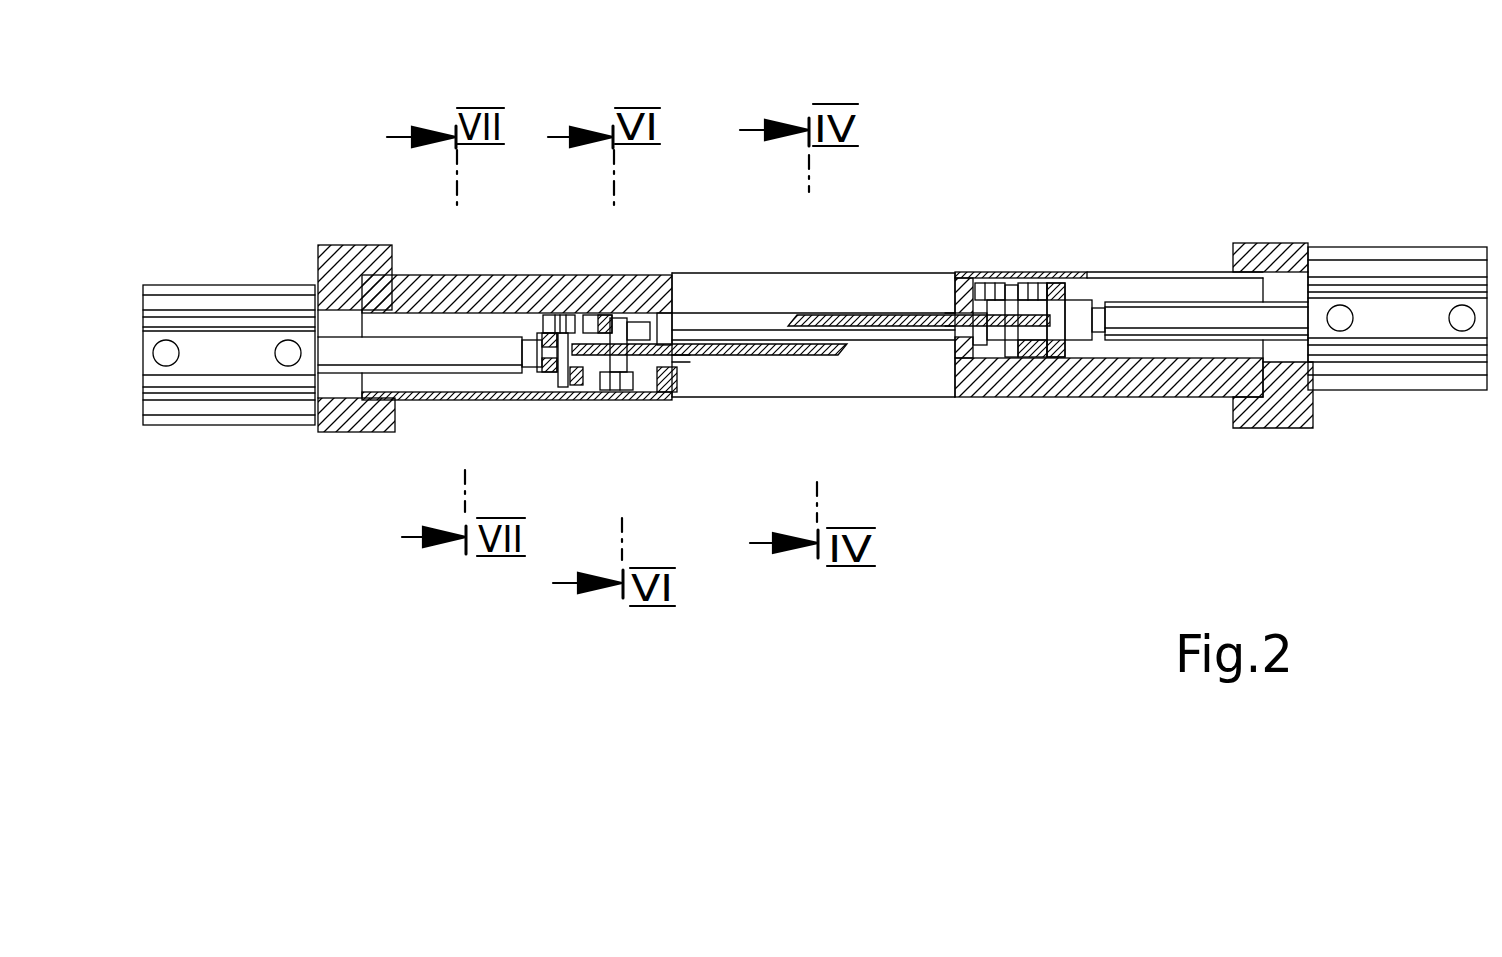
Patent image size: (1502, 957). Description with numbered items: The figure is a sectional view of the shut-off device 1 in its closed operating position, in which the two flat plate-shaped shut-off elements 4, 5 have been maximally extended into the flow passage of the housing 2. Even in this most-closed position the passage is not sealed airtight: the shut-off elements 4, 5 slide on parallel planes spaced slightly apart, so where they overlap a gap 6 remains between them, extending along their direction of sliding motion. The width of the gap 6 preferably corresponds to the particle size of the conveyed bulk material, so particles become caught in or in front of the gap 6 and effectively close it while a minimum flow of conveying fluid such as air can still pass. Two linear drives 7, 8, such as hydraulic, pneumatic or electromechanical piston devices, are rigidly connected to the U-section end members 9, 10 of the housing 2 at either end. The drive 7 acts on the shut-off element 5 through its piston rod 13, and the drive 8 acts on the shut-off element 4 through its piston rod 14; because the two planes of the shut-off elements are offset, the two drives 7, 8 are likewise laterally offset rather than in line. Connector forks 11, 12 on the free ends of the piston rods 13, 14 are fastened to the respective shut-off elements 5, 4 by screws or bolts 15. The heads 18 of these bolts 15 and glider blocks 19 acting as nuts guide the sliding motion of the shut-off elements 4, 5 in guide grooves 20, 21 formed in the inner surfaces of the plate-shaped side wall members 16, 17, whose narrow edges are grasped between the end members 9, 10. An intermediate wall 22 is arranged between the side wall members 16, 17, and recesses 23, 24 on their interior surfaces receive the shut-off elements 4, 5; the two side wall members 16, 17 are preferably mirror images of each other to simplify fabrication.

The shut-off device 1 is at (532, 130).
The housing 2 is at (362, 437).
The shut-off element 4 is at (883, 310).
The shut-off element 5 is at (757, 357).
The gap 6 is at (818, 335).
The drive 7 is at (217, 293).
The drive 8 is at (1395, 257).
The U-section end member 9 is at (345, 262).
The U-section end member 10 is at (1270, 250).
The connector fork 11 is at (543, 395).
The connector fork 12 is at (1040, 350).
The piston rod 13 is at (483, 350).
The piston rod 14 is at (1197, 315).
The screw or bolt 15 is at (1003, 270).
The side wall member 16 is at (581, 300).
The side wall member 17 is at (1095, 383).
The head 18 is at (612, 390).
The glider block 19 is at (633, 315).
The guide groove 20 is at (428, 318).
The guide groove 21 is at (650, 385).
The intermediate wall 22 is at (648, 392).
The recess 23 is at (678, 364).
The recess 24 is at (948, 308).